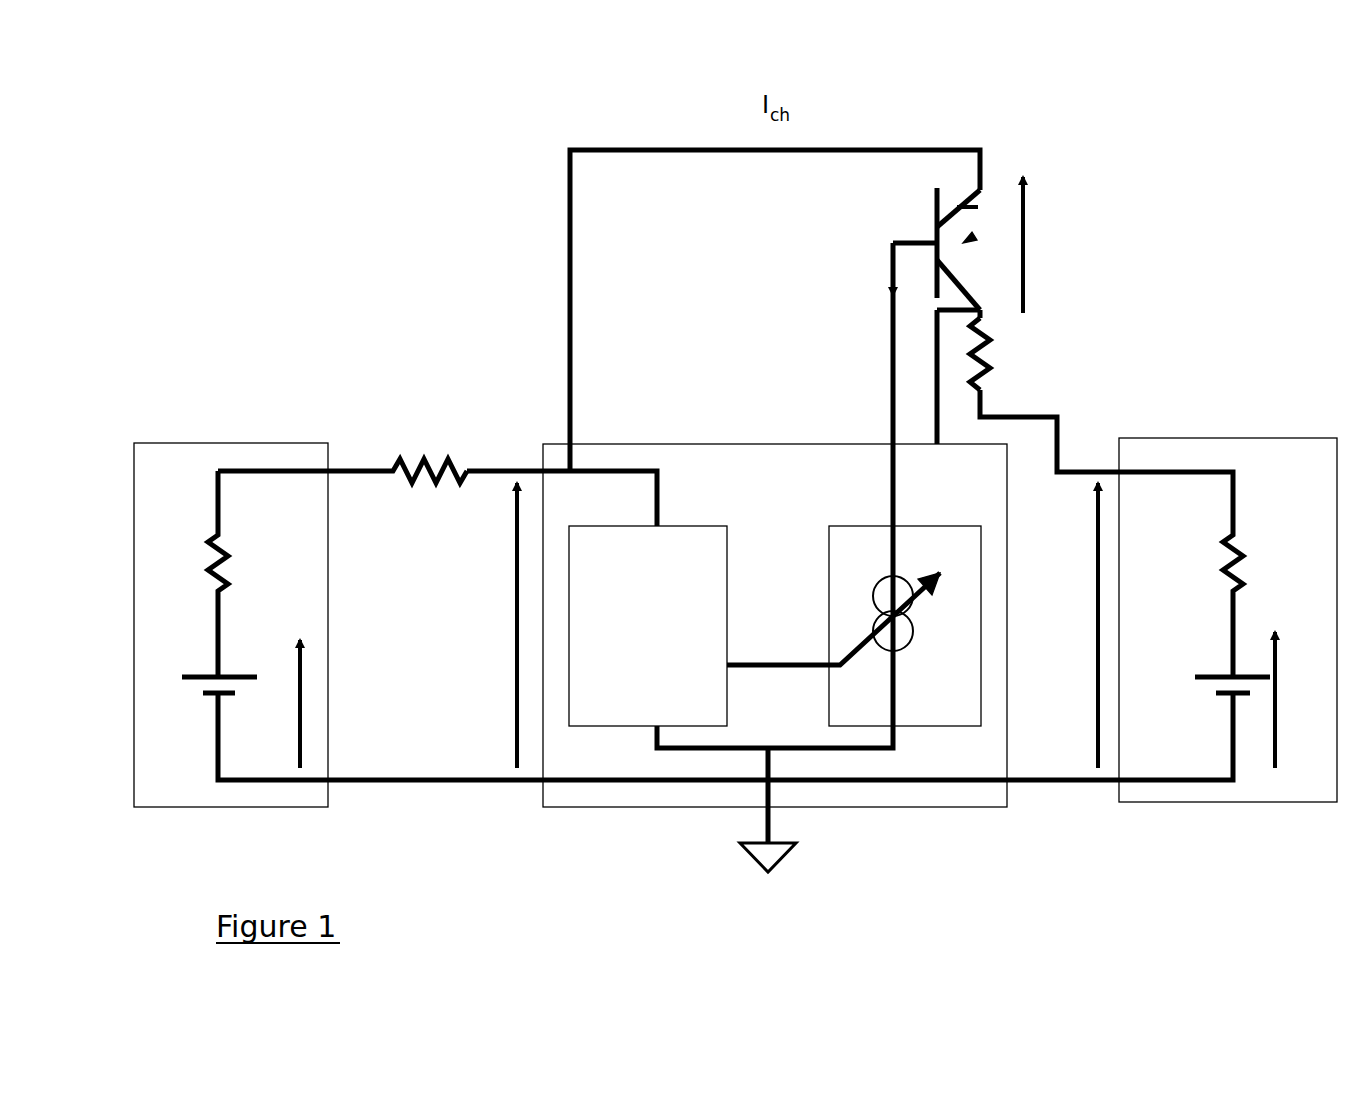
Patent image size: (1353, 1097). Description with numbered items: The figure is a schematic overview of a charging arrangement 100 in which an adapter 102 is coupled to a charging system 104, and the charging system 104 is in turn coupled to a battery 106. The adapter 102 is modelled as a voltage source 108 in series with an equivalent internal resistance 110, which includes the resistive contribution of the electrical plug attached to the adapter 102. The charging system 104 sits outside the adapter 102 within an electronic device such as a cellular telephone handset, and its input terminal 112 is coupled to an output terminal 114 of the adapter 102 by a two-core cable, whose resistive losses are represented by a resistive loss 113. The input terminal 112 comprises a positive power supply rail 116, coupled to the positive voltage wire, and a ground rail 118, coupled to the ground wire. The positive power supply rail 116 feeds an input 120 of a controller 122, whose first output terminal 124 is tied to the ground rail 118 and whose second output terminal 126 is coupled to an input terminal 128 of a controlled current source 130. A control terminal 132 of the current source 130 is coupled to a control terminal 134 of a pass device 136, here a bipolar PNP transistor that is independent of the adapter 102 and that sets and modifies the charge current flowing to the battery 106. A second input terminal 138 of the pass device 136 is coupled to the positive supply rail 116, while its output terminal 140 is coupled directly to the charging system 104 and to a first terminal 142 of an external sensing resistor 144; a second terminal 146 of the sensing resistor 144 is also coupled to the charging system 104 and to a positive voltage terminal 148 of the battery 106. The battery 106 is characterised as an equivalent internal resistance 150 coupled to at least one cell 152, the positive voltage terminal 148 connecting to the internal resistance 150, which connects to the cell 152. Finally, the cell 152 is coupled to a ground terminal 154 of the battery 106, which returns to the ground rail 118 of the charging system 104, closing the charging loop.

The charging arrangement 100 is at (383, 272).
The adapter 102 is at (228, 443).
The charging system 104 is at (738, 444).
The battery 106 is at (1198, 438).
The voltage source 108 is at (210, 673).
The equivalent internal resistance 110 is at (172, 538).
The input terminal 112 is at (540, 471).
The resistive loss 113 is at (430, 480).
The output terminal 114 is at (330, 471).
The positive power supply rail 116 is at (603, 471).
The ground rail 118 is at (590, 782).
The input 120 is at (665, 524).
The controller 122 is at (648, 626).
The first output terminal 124 is at (655, 726).
The second output terminal 126 is at (735, 665).
The input terminal 128 is at (822, 668).
The controlled current source 130 is at (780, 563).
The control terminal 132 is at (832, 526).
The control terminal 134 is at (890, 243).
The pass device 136 is at (960, 243).
The second input terminal 138 is at (982, 192).
The output terminal 140 is at (983, 308).
The first terminal 142 is at (985, 328).
The sensing resistor 144 is at (968, 358).
The second terminal 146 is at (985, 396).
The positive voltage terminal 148 is at (1118, 471).
The equivalent internal resistance 150 is at (1170, 563).
The cell 152 is at (1170, 676).
The ground terminal 154 is at (1100, 782).